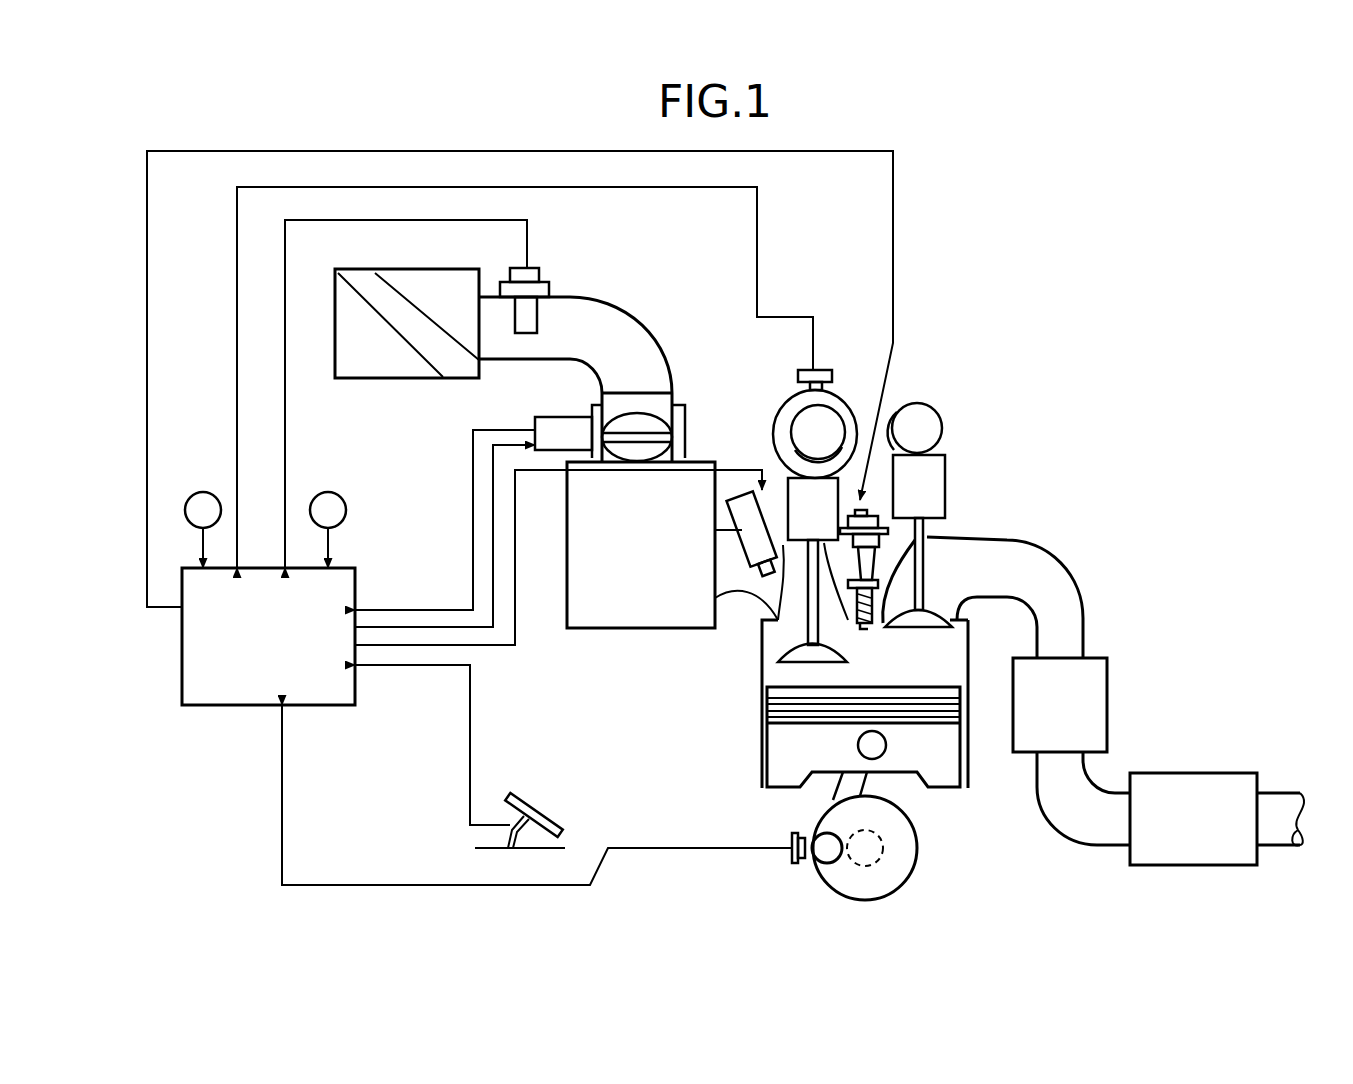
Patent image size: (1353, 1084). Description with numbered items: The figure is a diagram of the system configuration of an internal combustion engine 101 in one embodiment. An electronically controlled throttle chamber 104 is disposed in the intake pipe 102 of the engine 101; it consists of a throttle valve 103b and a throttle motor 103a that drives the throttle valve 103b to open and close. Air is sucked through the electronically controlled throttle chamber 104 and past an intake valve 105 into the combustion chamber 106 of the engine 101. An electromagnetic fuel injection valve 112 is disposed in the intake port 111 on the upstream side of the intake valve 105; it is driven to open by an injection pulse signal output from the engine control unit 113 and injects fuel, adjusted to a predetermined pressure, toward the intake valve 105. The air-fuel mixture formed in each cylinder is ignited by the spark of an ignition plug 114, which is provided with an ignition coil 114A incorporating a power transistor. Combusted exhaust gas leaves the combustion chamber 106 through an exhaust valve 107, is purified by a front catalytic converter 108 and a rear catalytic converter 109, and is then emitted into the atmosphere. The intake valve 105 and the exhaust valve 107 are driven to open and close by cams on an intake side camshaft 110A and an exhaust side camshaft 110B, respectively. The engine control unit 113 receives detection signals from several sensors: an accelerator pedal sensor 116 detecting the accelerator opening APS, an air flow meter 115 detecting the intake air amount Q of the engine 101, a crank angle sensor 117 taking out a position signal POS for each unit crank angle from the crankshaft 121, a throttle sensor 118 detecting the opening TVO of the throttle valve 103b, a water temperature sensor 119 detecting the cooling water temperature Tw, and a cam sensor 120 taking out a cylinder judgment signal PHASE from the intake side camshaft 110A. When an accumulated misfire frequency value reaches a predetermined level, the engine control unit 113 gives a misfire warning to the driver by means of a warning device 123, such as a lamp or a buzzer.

The internal combustion engine 101 is at (752, 740).
The intake pipe 102 is at (625, 317).
The throttle motor 103a is at (567, 427).
The throttle valve 103b is at (633, 423).
The electronically controlled throttle chamber 104 is at (478, 406).
The intake valve 105 is at (810, 613).
The combustion chamber 106 is at (955, 668).
The exhaust valve 107 is at (930, 535).
The front catalytic converter 108 is at (1093, 678).
The rear catalytic converter 109 is at (1207, 770).
The intake side camshaft 110A is at (832, 425).
The exhaust side camshaft 110B is at (920, 410).
The intake port 111 is at (752, 603).
The electromagnetic fuel injection valve 112 is at (753, 532).
The engine control unit 113 is at (225, 706).
The ignition plug 114 is at (870, 572).
The ignition coil 114A is at (876, 518).
The air flow meter 115 is at (531, 268).
The accelerator pedal sensor 116 is at (500, 862).
The crank angle sensor 117 is at (791, 868).
The throttle sensor 118 is at (688, 437).
The water temperature sensor 119 is at (200, 500).
The cam sensor 120 is at (806, 379).
The crankshaft 121 is at (897, 862).
The warning device 123 is at (337, 497).